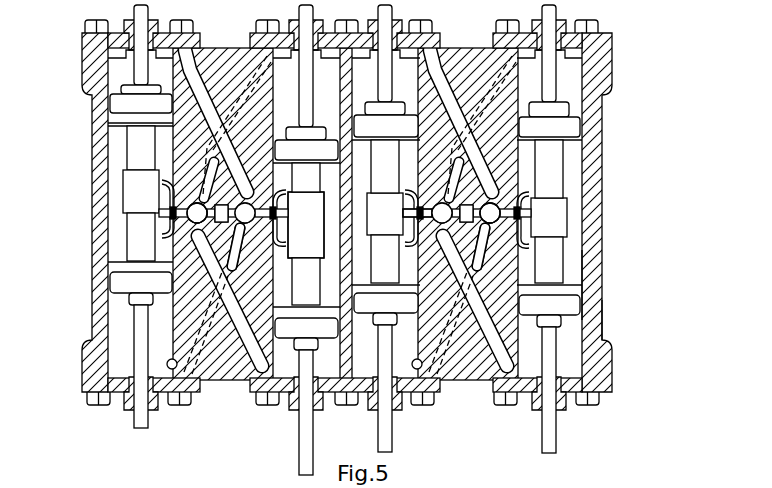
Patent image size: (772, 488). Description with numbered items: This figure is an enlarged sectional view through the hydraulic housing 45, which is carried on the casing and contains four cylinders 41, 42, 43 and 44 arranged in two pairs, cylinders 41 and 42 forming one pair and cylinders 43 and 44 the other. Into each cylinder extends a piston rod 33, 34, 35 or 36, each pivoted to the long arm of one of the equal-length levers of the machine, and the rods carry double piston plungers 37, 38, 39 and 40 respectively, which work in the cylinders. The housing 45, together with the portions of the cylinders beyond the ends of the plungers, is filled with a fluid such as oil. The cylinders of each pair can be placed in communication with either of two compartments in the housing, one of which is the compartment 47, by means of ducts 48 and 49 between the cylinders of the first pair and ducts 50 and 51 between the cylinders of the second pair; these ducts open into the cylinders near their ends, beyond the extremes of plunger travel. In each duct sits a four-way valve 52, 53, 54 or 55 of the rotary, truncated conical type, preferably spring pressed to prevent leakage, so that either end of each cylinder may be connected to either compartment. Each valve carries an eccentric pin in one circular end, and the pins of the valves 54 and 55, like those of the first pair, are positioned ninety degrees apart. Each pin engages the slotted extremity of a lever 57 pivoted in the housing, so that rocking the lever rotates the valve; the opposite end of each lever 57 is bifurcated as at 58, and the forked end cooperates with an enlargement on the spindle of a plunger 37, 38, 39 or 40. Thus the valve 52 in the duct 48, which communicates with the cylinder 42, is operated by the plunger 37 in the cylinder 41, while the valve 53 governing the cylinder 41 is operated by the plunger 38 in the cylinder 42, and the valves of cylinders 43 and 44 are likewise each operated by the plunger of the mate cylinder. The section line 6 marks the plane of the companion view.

The ball and socket coupling 6 is at (122, 214).
The piston rod 33 is at (150, 13).
The piston rod 34 is at (298, 14).
The piston rod 35 is at (393, 14).
The piston rod 36 is at (542, 14).
The double piston plunger 37 is at (140, 105).
The double piston plunger 38 is at (306, 145).
The double piston plunger 39 is at (386, 121).
The double piston plunger 40 is at (549, 121).
The cylinder 41 is at (113, 397).
The cylinder 42 is at (283, 362).
The cylinder 43 is at (357, 360).
The cylinder 44 is at (570, 347).
The housing 45 is at (598, 318).
The compartment 47 is at (235, 262).
The duct 48 is at (140, 292).
The duct 49 is at (306, 334).
The duct 50 is at (386, 309).
The duct 51 is at (597, 282).
The four-way valve 52 is at (190, 205).
The four-way valve 53 is at (250, 224).
The four-way valve 54 is at (425, 200).
The four-way valve 55 is at (510, 200).
The lever 57 is at (182, 215).
The bifurcated end 58 is at (205, 232).